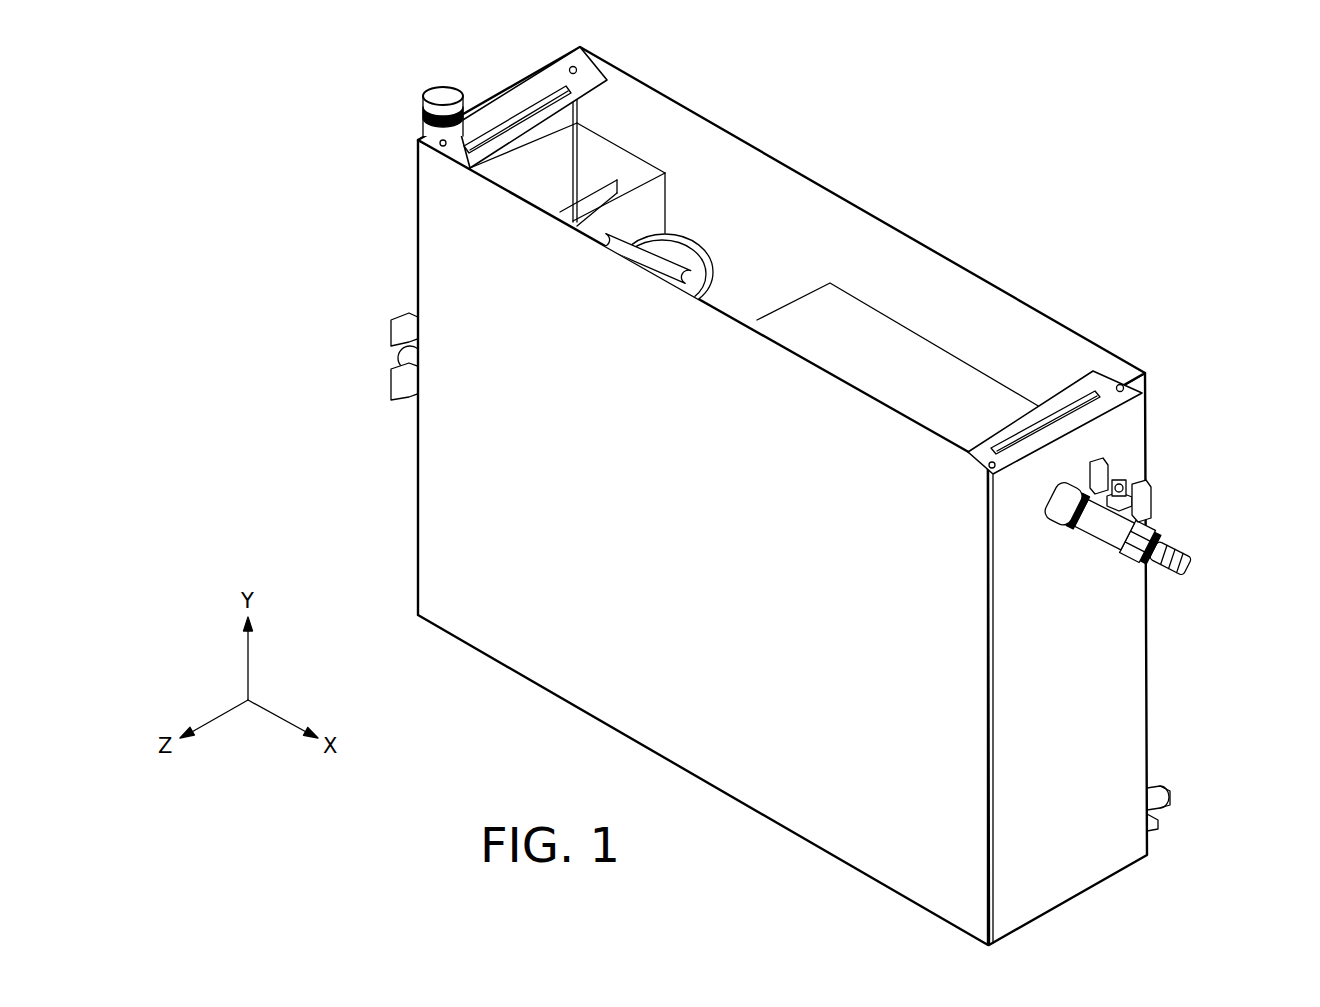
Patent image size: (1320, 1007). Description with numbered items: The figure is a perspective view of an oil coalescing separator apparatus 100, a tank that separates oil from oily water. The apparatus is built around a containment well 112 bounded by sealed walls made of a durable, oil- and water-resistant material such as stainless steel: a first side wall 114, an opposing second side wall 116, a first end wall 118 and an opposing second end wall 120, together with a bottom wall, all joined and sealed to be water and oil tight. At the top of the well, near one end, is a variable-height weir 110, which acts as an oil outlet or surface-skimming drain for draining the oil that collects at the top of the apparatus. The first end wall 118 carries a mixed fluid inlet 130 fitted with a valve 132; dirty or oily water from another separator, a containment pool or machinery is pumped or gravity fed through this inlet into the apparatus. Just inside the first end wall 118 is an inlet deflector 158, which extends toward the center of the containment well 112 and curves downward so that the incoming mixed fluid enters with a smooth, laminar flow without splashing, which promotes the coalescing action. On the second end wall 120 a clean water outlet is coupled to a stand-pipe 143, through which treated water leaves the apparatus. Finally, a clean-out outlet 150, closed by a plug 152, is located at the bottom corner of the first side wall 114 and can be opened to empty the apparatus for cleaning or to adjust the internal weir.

The coalescing separator apparatus 100 is at (1015, 276).
The variable-height weir 110 is at (700, 237).
The containment well 112 is at (895, 288).
The first side wall 114 is at (1117, 350).
The second side wall 116 is at (800, 806).
The first end wall 118 is at (1148, 438).
The second end wall 120 is at (538, 82).
The mixed fluid inlet 130 is at (1056, 523).
The valve 132 is at (1150, 490).
The stand-pipe 143 is at (418, 130).
The clean-out outlet 150 is at (1150, 813).
The plug 152 is at (1163, 790).
The inlet deflector 158 is at (1063, 387).